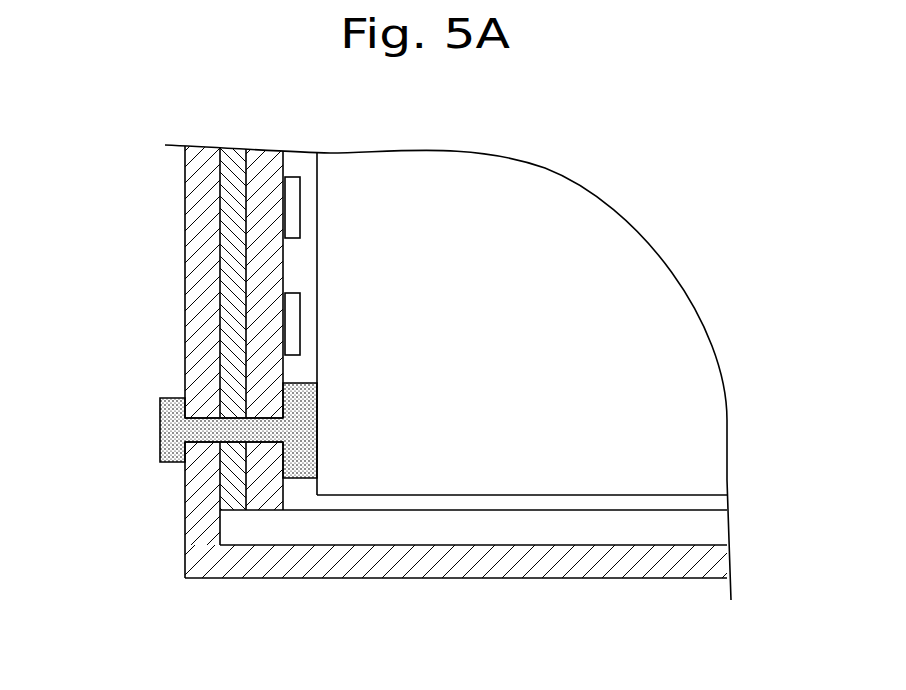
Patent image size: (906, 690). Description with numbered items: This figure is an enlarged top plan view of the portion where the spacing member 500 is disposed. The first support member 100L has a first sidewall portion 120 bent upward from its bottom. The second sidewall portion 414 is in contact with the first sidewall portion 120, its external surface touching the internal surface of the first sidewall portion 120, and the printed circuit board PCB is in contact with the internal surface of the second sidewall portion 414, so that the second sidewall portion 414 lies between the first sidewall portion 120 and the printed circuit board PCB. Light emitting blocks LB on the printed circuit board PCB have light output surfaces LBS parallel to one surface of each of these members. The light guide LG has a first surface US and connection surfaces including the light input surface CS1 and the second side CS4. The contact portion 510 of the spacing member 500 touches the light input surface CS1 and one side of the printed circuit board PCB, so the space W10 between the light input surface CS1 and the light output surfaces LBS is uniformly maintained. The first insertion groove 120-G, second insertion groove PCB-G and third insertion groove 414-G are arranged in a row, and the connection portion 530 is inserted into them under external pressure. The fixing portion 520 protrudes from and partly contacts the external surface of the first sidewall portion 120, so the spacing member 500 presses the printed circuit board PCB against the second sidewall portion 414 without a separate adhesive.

The first sidewall portion 120 is at (193, 189).
The second sidewall portion 414 is at (232, 233).
The printed circuit board PCB is at (262, 273).
The second insertion groove PCB-G is at (272, 418).
The third insertion groove 414-G is at (235, 418).
The first insertion groove 120-G is at (205, 418).
The spacing member 500 is at (86, 419).
The fixing portion 520 is at (166, 430).
The connection portion 530 is at (207, 443).
The contact portion 510 is at (293, 462).
The light emitting block LB is at (302, 152).
The light output surface LBS is at (302, 217).
The space W10 is at (337, 252).
The light input surface CS1 is at (316, 340).
The first surface US is at (528, 333).
The second side CS4 is at (588, 498).
The light guide LG is at (415, 501).
The first support member 100L is at (516, 592).